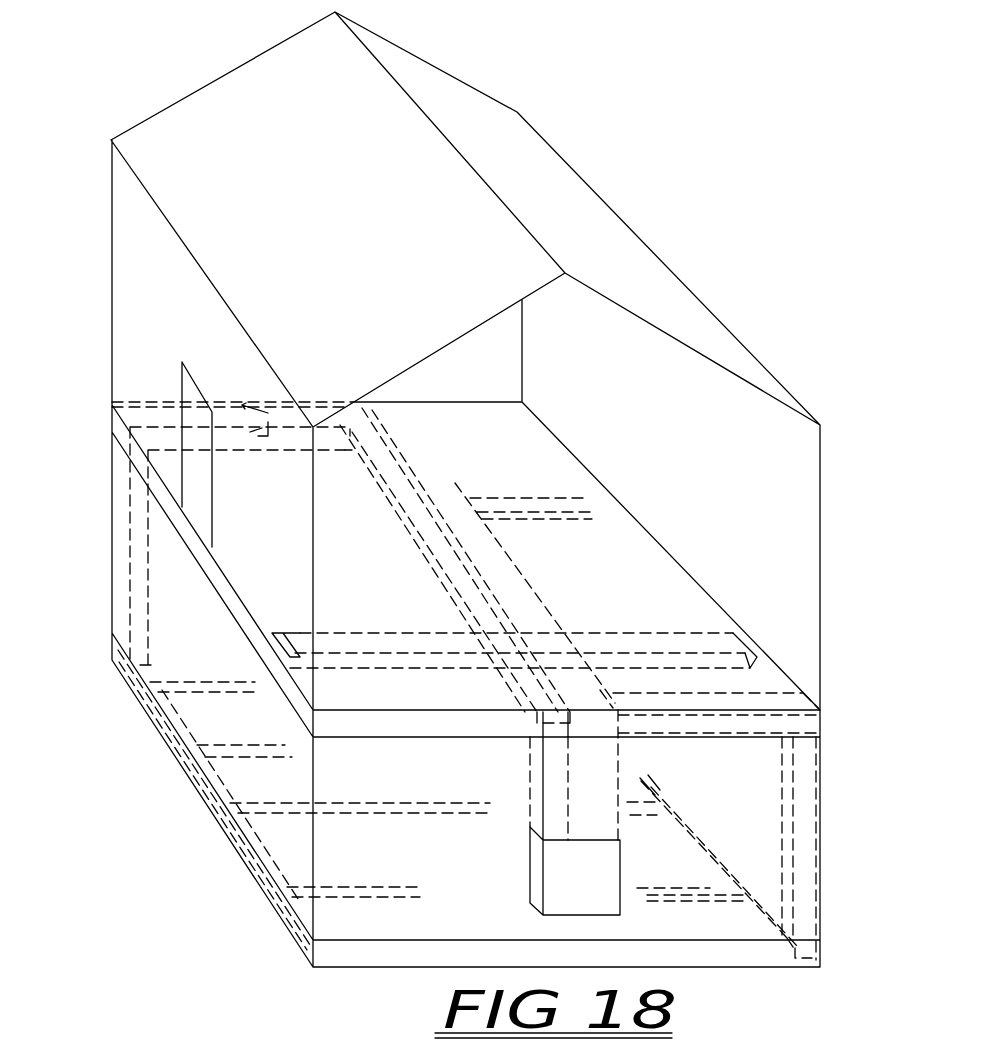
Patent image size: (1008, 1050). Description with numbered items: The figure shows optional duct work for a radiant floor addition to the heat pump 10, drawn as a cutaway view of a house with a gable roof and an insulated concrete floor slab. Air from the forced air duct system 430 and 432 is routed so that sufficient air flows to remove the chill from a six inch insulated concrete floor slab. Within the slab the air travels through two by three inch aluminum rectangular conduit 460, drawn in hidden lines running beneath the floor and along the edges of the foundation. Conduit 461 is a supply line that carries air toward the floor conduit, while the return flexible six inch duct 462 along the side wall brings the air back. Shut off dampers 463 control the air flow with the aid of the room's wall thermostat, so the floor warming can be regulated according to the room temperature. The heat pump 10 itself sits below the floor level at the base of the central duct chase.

The heat pump 10 is at (533, 898).
The forced air duct system 430 is at (450, 603).
The forced air duct system 432 is at (543, 611).
The aluminum rectangular conduit 460 is at (703, 837).
The supply line conduit 461 is at (813, 787).
The return flexible duct 462 is at (120, 532).
The shut off dampers 463 is at (259, 455).